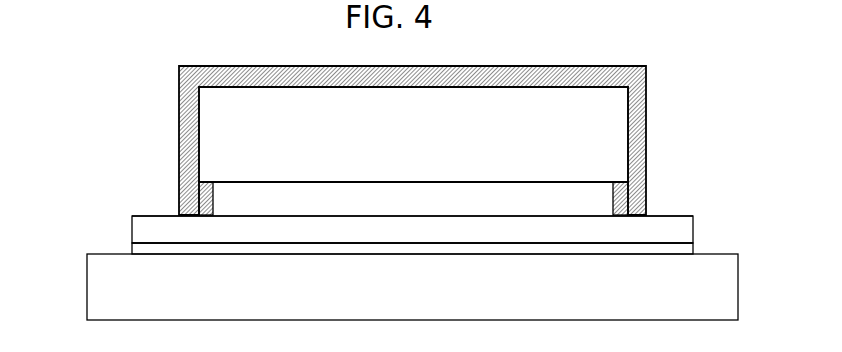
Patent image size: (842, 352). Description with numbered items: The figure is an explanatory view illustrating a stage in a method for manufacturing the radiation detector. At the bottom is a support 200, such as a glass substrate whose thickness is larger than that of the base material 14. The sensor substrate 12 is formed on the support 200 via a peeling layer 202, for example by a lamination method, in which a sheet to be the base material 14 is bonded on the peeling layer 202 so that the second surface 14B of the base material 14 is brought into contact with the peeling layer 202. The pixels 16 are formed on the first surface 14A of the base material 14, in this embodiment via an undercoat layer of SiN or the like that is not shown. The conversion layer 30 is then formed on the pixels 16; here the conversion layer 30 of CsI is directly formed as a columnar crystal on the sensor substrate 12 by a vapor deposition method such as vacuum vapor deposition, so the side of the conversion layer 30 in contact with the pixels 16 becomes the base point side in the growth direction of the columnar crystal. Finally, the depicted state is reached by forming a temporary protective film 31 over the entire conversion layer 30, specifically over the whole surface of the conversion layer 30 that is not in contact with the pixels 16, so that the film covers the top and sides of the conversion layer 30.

The support 200 is at (98, 286).
The peeling layer 202 is at (146, 250).
The sensor substrate 12 is at (464, 208).
The base material 14 is at (683, 229).
The first surface 14A is at (160, 216).
The second surface 14B is at (360, 244).
The pixels 16 is at (593, 201).
The conversion layer 30 is at (615, 135).
The temporary protective film 31 is at (641, 94).